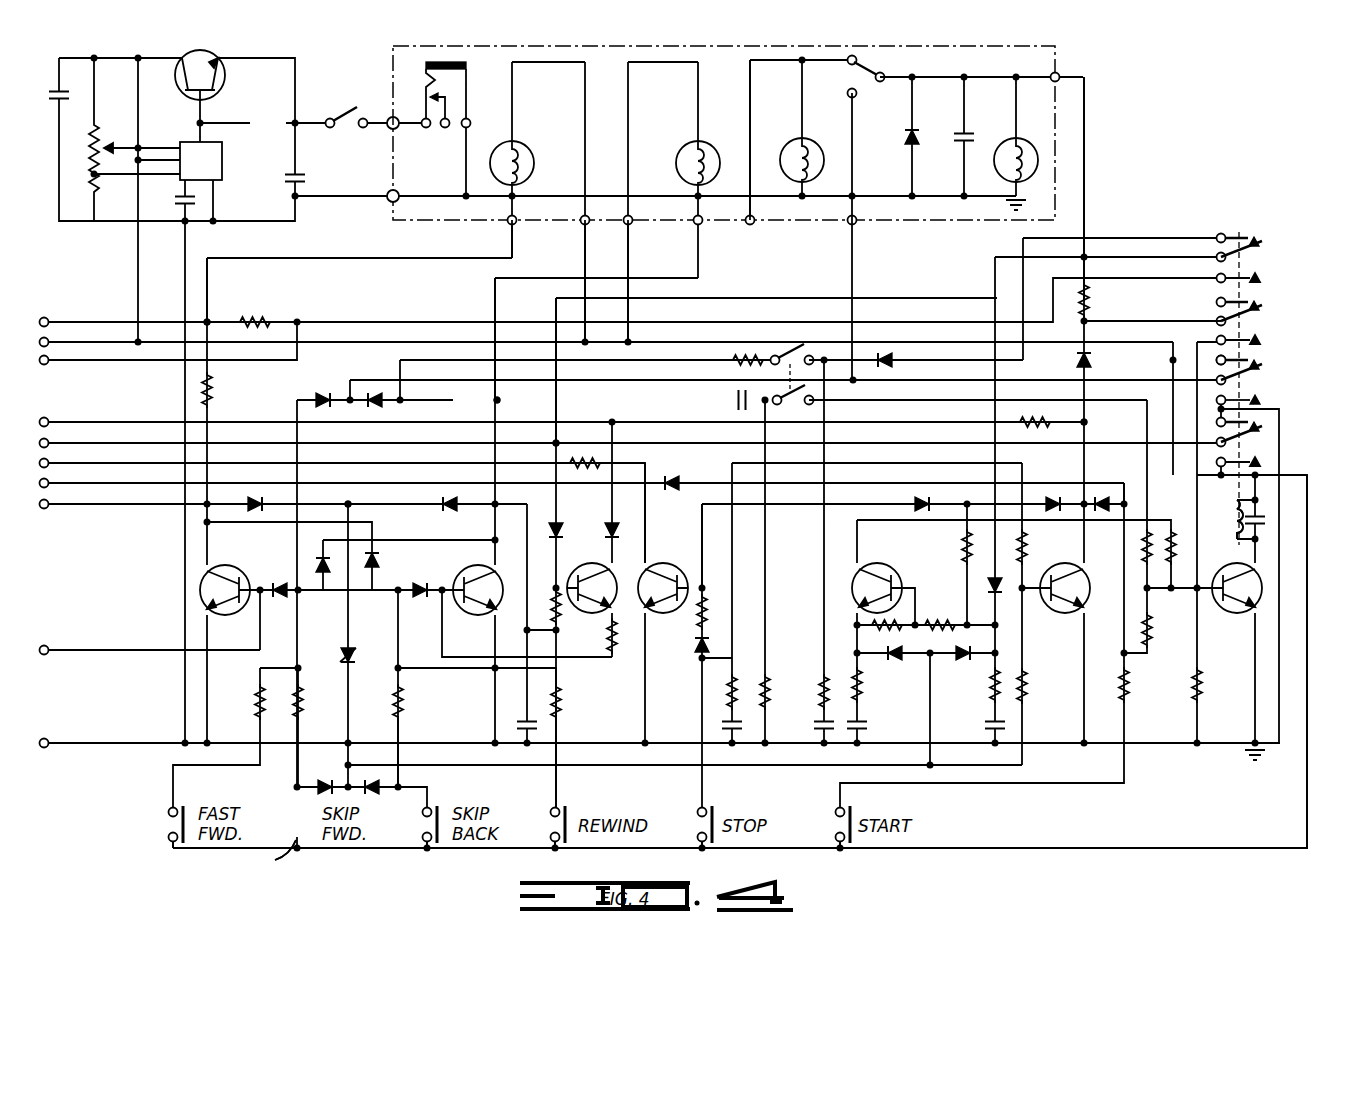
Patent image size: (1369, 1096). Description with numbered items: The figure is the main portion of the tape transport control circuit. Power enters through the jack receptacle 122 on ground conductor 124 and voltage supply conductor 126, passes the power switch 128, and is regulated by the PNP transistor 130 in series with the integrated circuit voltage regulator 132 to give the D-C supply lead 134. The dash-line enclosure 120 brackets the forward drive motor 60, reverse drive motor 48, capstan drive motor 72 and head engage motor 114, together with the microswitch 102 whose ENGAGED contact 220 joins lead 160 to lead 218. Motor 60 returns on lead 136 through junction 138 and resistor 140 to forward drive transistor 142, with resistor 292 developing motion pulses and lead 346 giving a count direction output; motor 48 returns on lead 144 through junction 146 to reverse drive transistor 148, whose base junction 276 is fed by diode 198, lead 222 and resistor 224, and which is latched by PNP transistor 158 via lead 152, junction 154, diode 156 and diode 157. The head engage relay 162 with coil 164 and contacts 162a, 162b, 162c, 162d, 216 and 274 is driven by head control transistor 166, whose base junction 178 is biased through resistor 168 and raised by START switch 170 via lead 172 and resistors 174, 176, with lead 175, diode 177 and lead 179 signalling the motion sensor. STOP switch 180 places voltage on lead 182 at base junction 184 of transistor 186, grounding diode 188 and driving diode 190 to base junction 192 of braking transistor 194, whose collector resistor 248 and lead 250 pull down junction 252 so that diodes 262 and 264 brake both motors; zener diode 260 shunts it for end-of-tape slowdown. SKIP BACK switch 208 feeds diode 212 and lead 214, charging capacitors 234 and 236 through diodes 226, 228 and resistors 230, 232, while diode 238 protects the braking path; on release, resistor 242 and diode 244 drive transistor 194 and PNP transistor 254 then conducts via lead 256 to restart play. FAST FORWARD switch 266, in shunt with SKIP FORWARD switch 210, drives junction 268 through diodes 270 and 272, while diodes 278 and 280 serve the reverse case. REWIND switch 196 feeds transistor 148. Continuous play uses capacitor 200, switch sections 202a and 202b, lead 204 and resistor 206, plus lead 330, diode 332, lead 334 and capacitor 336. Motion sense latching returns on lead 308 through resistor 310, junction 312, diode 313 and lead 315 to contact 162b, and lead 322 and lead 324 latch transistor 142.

The PNP transistor 130 is at (266, 91).
The integrated circuit voltage regulator 132 is at (217, 170).
The power switch 128 is at (345, 110).
The voltage supply conductor 126 is at (394, 118).
The jack receptacle 122 is at (468, 66).
The ground conductor 124 is at (222, 224).
The dash-line enclosure 120 is at (993, 46).
The lead 152 is at (786, 46).
The forward drive motor 60 is at (534, 160).
The reverse drive motor 48 is at (706, 142).
The capstan drive motor 72 is at (812, 140).
The microswitch 102 is at (870, 58).
The lead 160 is at (985, 77).
The ENGAGED contact 220 is at (855, 100).
The head engage motor 114 is at (1022, 137).
The lead 218 is at (853, 246).
The lead 144 is at (700, 246).
The D-C voltage supply lead 134 is at (136, 260).
The lead 136 is at (50, 322).
The junction 138 is at (207, 318).
The resistor 292 is at (254, 318).
The resistor 140 is at (212, 390).
The lead 346 is at (52, 362).
The lead 308 is at (50, 422).
The resistor 310 is at (1027, 420).
The junction 312 is at (1088, 420).
The lead 250 is at (50, 462).
The collector resistor 248 is at (604, 463).
The lead 182 is at (888, 466).
The lead 179 is at (52, 485).
The diode 177 is at (674, 478).
The lead 175 is at (1090, 484).
The lead 322 is at (52, 506).
The diode 262 is at (252, 503).
The junction 252 is at (349, 503).
The diode 264 is at (452, 503).
The lead 324 is at (50, 649).
The diode 272 is at (318, 396).
The diode 280 is at (388, 405).
The junction 146 is at (494, 400).
The lead 334 is at (618, 360).
The CONTINUOUS PLAY switch section 202b is at (798, 348).
The CONTINUOUS PLAY switch section 202a is at (796, 404).
The capacitor 200 is at (736, 398).
The diode 332 is at (893, 358).
The lead 330 is at (1128, 238).
The lead 204 is at (896, 400).
The junction 154 is at (562, 435).
The diode 156 is at (556, 520).
The diode 157 is at (612, 522).
The PNP transistor 158 is at (603, 559).
The braking transistor 194 is at (684, 559).
The base junction 192 is at (698, 594).
The diode 190 is at (698, 650).
The forward drive transistor 142 is at (247, 563).
The reverse drive transistor 148 is at (480, 563).
The junction point 268 is at (280, 598).
The diode 270 is at (316, 568).
The diode 278 is at (370, 580).
The junction 276 is at (414, 598).
The diode 198 is at (418, 584).
The zener diode 260 is at (349, 650).
The resistor 224 is at (402, 690).
The lead 222 is at (402, 724).
The diode 244 is at (915, 503).
The diode 238 is at (1066, 494).
The diode 188 is at (1103, 514).
The resistor 242 is at (960, 556).
The lead 256 is at (940, 534).
The PNP transistor 254 is at (899, 563).
The NPN transistor 186 is at (1075, 559).
The base junction 184 is at (1028, 592).
The resistor 206 is at (1150, 530).
The resistor 176 is at (1150, 626).
The resistor 174 is at (1128, 688).
The resistor 168 is at (1201, 688).
The head control transistor 166 is at (1240, 555).
The base junction 178 is at (1200, 592).
The relay coil 164 is at (1232, 522).
The head engage relay 162 is at (1260, 226).
The relay contact 162a is at (1265, 247).
The relay contact 162b is at (1265, 311).
The relay contact 162c is at (1265, 380).
The relay contact 162d is at (1265, 442).
The relay contact 216 is at (1248, 364).
The relay contact 274 is at (1250, 400).
The diode 313 is at (1092, 360).
The lead 315 is at (1126, 321).
The capacitor 336 is at (828, 726).
The diode 228 is at (904, 662).
The resistor 232 is at (866, 700).
The capacitor 236 is at (866, 724).
The diode 226 is at (960, 660).
The resistor 230 is at (992, 700).
The capacitor 234 is at (988, 722).
The FAST FORWARD pushbutton switch 266 is at (183, 810).
The SKIP FORWARD pushbutton switch 210 is at (275, 859).
The diode 212 is at (374, 794).
The SKIP BACK pushbutton switch 208 is at (438, 810).
The REWIND pushbutton switch 196 is at (566, 810).
The lead 214 is at (625, 767).
The STOP pushbutton switch 180 is at (712, 810).
The START pushbutton switch 170 is at (851, 810).
The lead 172 is at (1048, 790).